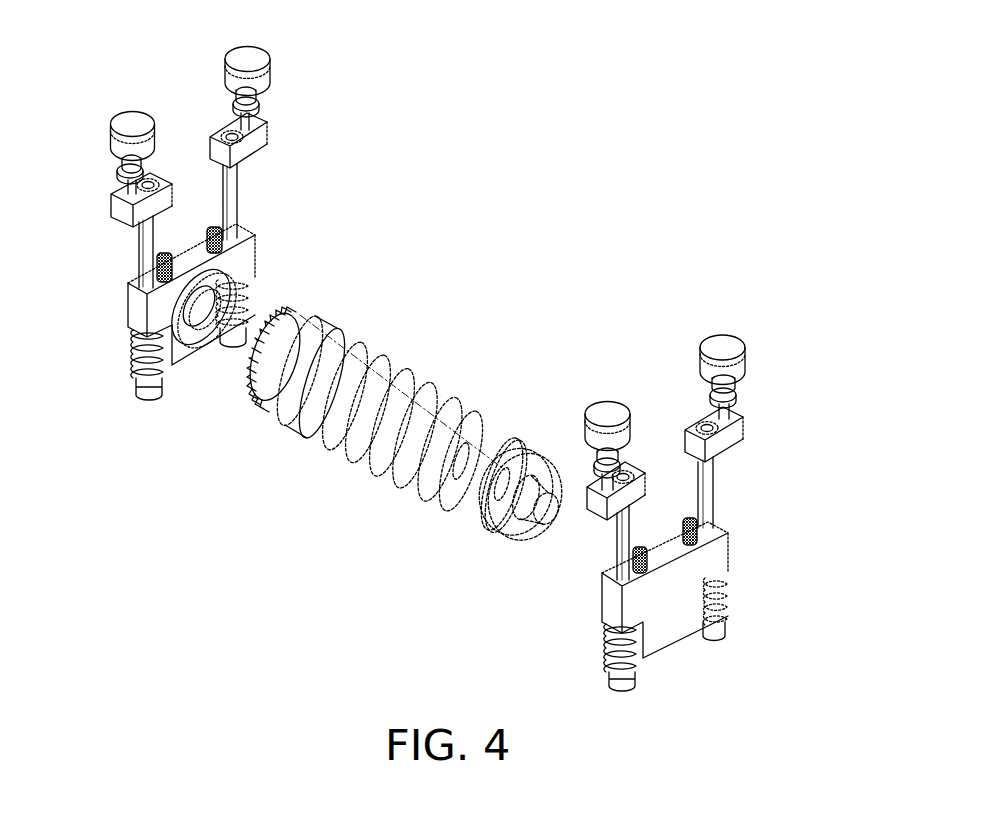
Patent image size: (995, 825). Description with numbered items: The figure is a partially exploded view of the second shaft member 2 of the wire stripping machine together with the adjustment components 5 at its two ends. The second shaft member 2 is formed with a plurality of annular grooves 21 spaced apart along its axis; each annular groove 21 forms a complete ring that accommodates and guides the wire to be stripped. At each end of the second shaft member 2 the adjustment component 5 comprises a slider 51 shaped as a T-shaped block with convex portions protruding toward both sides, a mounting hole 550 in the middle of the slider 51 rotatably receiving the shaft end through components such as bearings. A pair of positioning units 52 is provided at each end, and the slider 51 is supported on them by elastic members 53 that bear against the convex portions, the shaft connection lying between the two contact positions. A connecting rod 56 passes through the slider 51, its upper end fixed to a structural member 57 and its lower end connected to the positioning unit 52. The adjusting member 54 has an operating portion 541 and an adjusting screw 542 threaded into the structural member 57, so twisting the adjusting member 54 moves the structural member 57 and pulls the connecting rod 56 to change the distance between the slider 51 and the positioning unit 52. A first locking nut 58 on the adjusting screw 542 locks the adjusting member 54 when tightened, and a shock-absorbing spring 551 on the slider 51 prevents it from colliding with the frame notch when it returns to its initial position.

The second shaft member 2 is at (518, 442).
The annular groove 21 is at (467, 443).
The adjustment component 5 is at (745, 410).
The slider 51 is at (247, 262).
The positioning unit 52 is at (708, 635).
The elastic member 53 is at (717, 588).
The adjusting member 54 is at (820, 329).
The operating portion 541 is at (723, 347).
The adjusting screw 542 is at (727, 387).
The mounting hole 550 is at (195, 307).
The shock-absorbing spring 551 is at (690, 528).
The connecting rod 56 is at (143, 240).
The structural member 57 is at (122, 205).
The first locking nut 58 is at (120, 142).